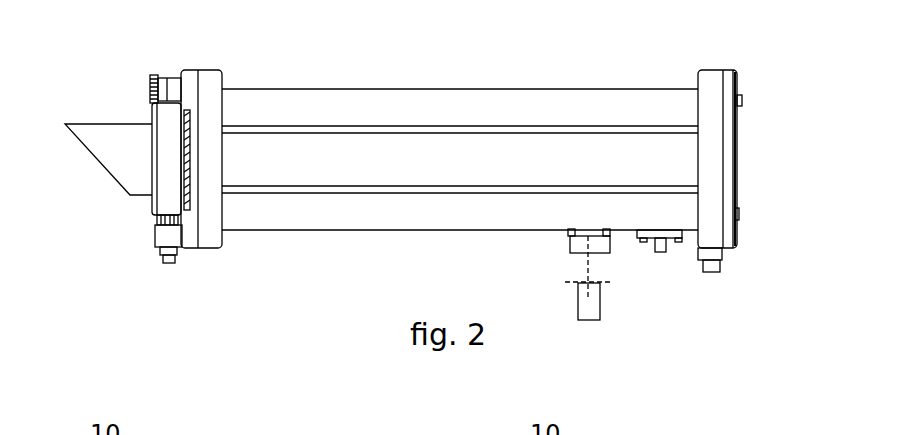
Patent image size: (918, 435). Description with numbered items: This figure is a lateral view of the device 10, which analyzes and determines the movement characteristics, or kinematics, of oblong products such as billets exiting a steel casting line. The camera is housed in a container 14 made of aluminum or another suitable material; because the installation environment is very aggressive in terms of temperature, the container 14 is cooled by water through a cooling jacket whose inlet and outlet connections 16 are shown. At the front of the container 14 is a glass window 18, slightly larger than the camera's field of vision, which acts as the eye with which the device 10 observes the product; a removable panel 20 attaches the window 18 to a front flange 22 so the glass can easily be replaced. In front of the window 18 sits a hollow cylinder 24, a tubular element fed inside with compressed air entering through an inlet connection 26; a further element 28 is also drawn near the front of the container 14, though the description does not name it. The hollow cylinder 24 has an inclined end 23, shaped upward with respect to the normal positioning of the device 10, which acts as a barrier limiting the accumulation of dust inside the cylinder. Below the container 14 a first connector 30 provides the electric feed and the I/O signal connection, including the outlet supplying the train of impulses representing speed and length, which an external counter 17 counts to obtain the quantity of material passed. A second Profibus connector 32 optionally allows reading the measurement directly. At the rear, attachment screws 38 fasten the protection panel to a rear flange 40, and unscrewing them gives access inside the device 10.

The device 10 is at (581, 49).
The container 14 is at (507, 113).
The cooling jacket connections 16 is at (714, 268).
The external counter 17 is at (592, 297).
The glass window 18 is at (188, 120).
The panel 20 is at (178, 182).
The front flange 22 is at (188, 82).
The inclined end 23 is at (82, 158).
The hollow cylinder 24 is at (108, 140).
The inlet connection 26 is at (170, 265).
The adjustment screw 28 is at (146, 86).
The first connector 30 is at (588, 243).
The second Profibus connector 32 is at (660, 245).
The attachment screws 38 is at (742, 101).
The rear flange 40 is at (708, 82).